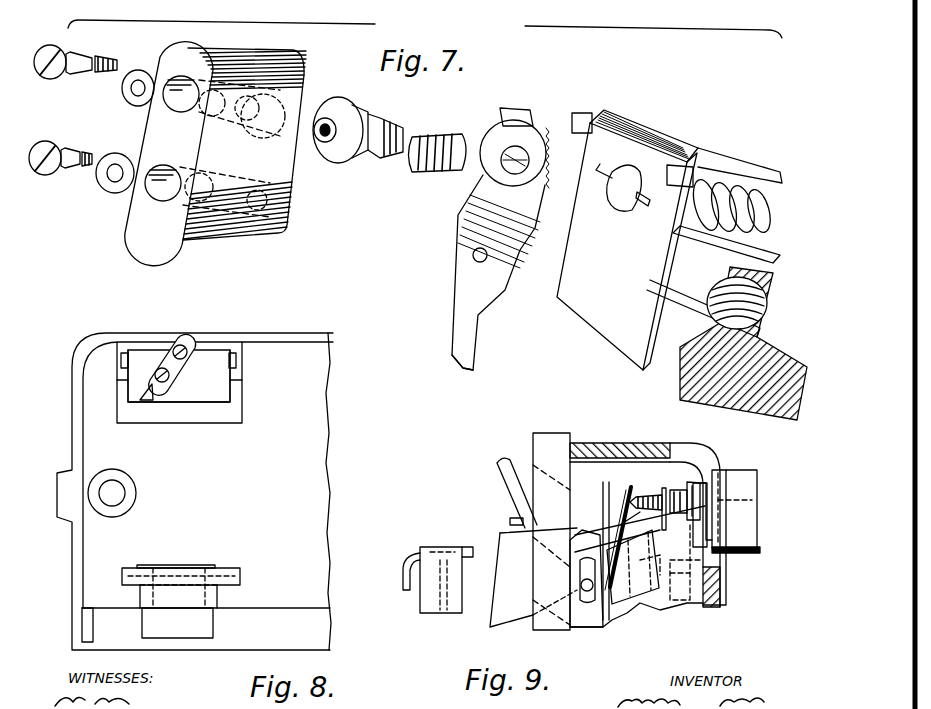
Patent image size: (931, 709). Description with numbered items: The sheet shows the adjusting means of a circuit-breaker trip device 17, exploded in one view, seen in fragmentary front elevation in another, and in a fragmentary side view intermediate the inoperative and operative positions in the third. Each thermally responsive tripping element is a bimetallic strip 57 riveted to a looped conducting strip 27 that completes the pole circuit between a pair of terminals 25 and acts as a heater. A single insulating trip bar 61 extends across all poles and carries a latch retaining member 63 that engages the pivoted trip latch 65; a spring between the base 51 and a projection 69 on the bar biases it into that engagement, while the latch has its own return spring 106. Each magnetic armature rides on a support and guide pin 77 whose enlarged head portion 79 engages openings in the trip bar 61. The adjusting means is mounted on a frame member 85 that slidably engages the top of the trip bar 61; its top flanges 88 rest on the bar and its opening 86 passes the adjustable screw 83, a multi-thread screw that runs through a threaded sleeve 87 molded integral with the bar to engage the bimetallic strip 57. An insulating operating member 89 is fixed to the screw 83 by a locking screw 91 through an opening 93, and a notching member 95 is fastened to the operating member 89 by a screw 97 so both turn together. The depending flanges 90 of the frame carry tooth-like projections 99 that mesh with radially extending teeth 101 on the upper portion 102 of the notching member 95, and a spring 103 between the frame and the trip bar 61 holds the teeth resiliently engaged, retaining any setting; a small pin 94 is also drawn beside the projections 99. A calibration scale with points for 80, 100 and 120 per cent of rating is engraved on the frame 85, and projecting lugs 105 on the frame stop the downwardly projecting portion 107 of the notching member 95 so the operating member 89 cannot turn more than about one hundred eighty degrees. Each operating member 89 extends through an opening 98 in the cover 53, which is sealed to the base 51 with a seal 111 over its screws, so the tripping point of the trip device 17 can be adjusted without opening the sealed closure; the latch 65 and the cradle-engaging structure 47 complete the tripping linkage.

In FIG. 8, the trip device 17 is at (195, 491).
In FIG. 9, the trip device 17 is at (493, 493).
In FIG. 8, the terminal 25 is at (236, 573).
In FIG. 8, the looped conducting strip 27 is at (210, 627).
In FIG. 9, the looped conducting strip 27 is at (580, 540).
In FIG. 9, the pedal 47 is at (533, 581).
In FIG. 8, the base 51 is at (323, 630).
In FIG. 9, the base 51 is at (552, 433).
In FIG. 8, the cover 53 is at (307, 470).
In FIG. 9, the cover 53 is at (597, 445).
In FIG. 9, the bimetallic strip 57 is at (633, 490).
In FIG. 7, the trip bar 61 is at (752, 390).
In FIG. 8, the trip bar 61 is at (140, 418).
In FIG. 9, the trip bar 61 is at (668, 547).
In FIG. 9, the latch retaining member 63 is at (575, 540).
In FIG. 9, the trip latch 65 is at (500, 533).
In FIG. 9, the projection 69 is at (641, 608).
In FIG. 9, the support and guide pin 77 is at (720, 600).
In FIG. 9, the enlarged head portion 79 is at (690, 573).
In FIG. 7, the calibration point 80 is at (594, 188).
In FIG. 8, the calibration point 80 is at (141, 370).
In FIG. 7, the adjustable screw 83 is at (385, 162).
In FIG. 9, the adjustable screw 83 is at (648, 496).
In FIG. 7, the frame member 85 is at (600, 325).
In FIG. 8, the frame member 85 is at (213, 349).
In FIG. 9, the frame member 85 is at (690, 482).
In FIG. 7, the opening 86 is at (630, 160).
In FIG. 7, the threaded sleeve 87 is at (708, 294).
In FIG. 9, the threaded sleeve 87 is at (658, 512).
In FIG. 7, the top flange 88 is at (758, 166).
In FIG. 7, the operating member 89 is at (292, 192).
In FIG. 8, the operating member 89 is at (168, 351).
In FIG. 9, the operating member 89 is at (752, 488).
In FIG. 7, the depending flange 90 is at (572, 258).
In FIG. 7, the locking screw 91 is at (64, 53).
In FIG. 8, the locking screw 91 is at (183, 347).
In FIG. 7, the opening 93 is at (172, 107).
In FIG. 7, the pin 94 is at (652, 193).
In FIG. 7, the notching member 95 is at (457, 233).
In FIG. 9, the notching member 95 is at (715, 528).
In FIG. 7, the screw 97 is at (55, 176).
In FIG. 8, the screw 97 is at (162, 383).
In FIG. 8, the opening 98 is at (244, 397).
In FIG. 9, the opening 98 is at (662, 444).
In FIG. 7, the tooth-like projection 99 is at (618, 178).
In FIG. 7, the calibration point 100 is at (595, 320).
In FIG. 8, the calibration point 100 is at (182, 390).
In FIG. 7, the radially extending teeth 101 is at (522, 172).
In FIG. 9, the radially extending teeth 101 is at (718, 507).
In FIG. 7, the upper portion 102 is at (492, 140).
In FIG. 7, the spring 103 is at (768, 213).
In FIG. 9, the spring 103 is at (682, 540).
In FIG. 7, the projecting lug 105 is at (584, 115).
In FIG. 8, the projecting lug 105 is at (121, 358).
In FIG. 9, the return spring 106 is at (463, 578).
In FIG. 7, the downwardly projecting portion 107 is at (477, 335).
In FIG. 8, the downwardly projecting portion 107 is at (147, 397).
In FIG. 9, the downwardly projecting portion 107 is at (730, 545).
In FIG. 8, the seal 111 is at (120, 488).
In FIG. 7, the calibration point 120 is at (650, 222).
In FIG. 8, the calibration point 120 is at (223, 370).